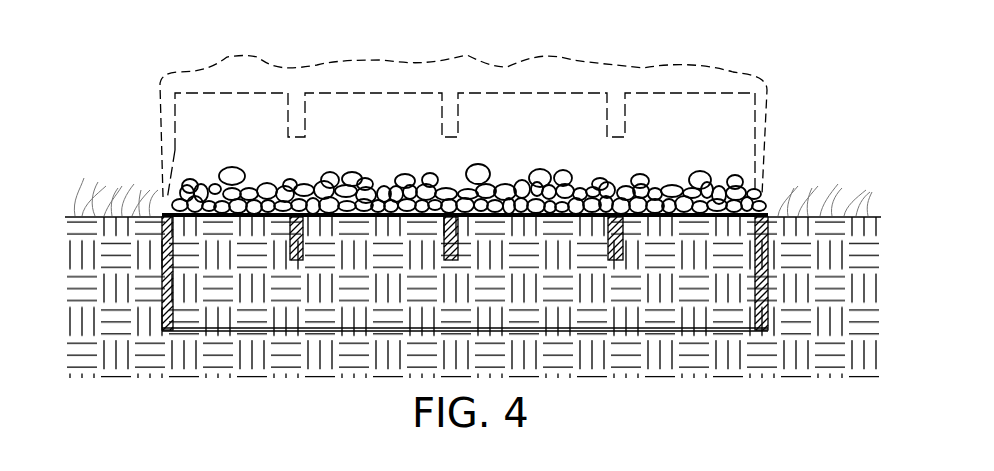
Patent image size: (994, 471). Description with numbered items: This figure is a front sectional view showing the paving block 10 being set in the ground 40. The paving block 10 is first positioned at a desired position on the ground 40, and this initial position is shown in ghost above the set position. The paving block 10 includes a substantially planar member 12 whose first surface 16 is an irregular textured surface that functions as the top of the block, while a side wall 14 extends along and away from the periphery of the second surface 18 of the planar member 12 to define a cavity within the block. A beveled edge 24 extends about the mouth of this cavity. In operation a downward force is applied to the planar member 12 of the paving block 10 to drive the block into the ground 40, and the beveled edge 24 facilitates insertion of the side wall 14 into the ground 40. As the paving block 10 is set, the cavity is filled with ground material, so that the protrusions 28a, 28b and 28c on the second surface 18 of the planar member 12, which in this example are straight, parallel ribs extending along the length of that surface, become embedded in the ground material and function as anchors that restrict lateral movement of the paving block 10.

The paving block 10 is at (650, 188).
The planar member 12 is at (240, 173).
The side wall 14 is at (768, 263).
The first surface 16 is at (352, 173).
The second surface 18 is at (570, 218).
The beveled edge 24 is at (768, 333).
The protrusion 28a is at (302, 262).
The protrusion 28b is at (445, 262).
The protrusion 28c is at (615, 263).
The ground 40 is at (122, 366).